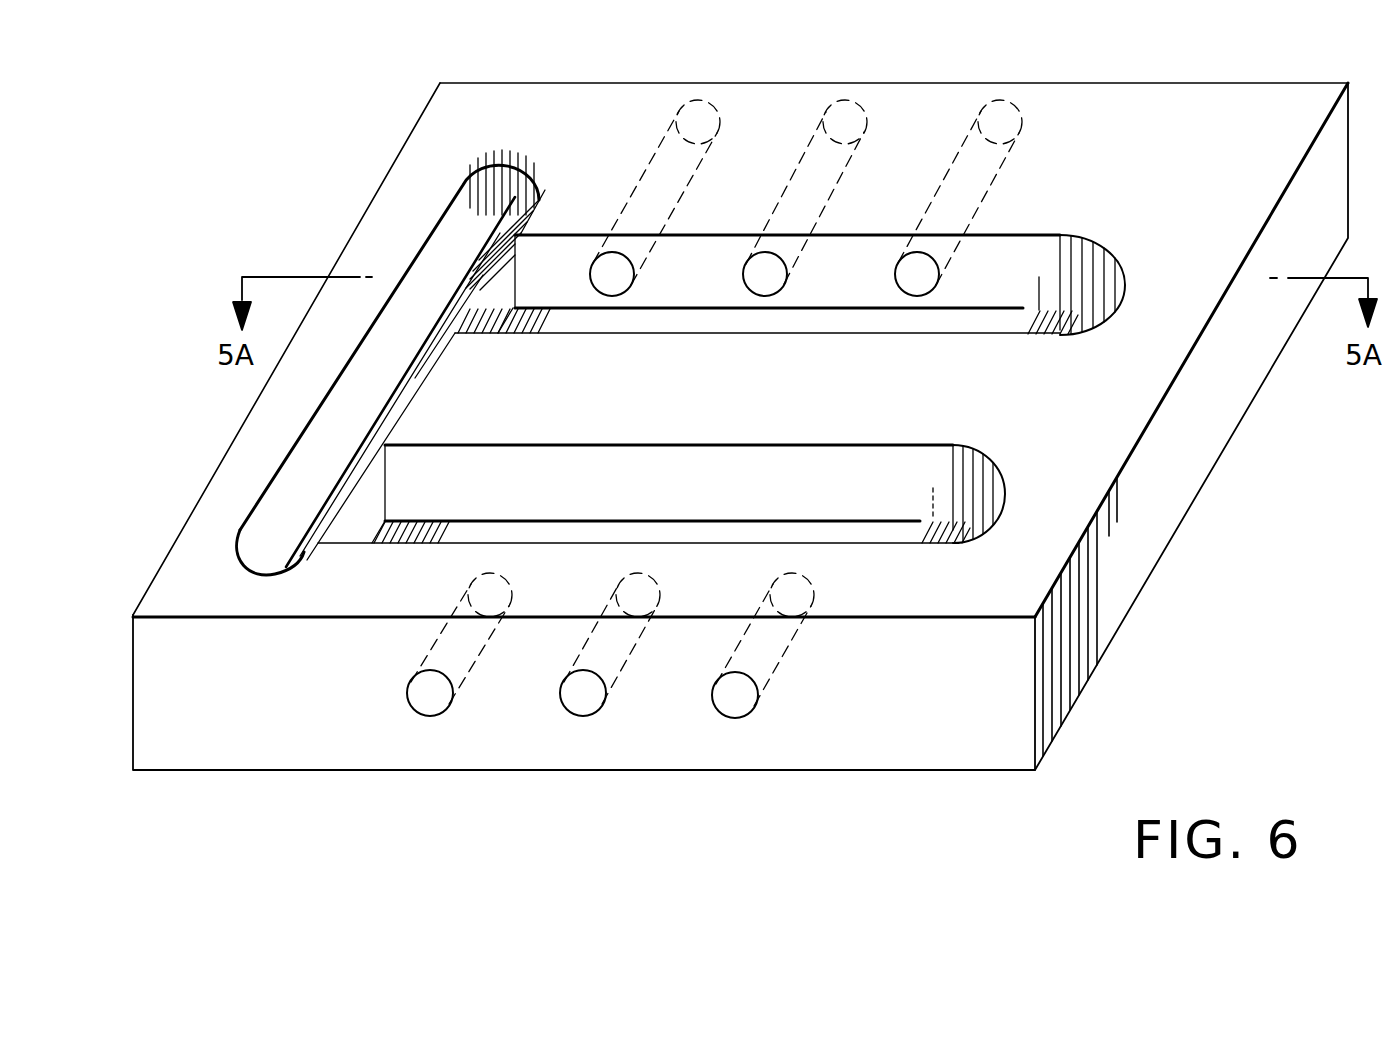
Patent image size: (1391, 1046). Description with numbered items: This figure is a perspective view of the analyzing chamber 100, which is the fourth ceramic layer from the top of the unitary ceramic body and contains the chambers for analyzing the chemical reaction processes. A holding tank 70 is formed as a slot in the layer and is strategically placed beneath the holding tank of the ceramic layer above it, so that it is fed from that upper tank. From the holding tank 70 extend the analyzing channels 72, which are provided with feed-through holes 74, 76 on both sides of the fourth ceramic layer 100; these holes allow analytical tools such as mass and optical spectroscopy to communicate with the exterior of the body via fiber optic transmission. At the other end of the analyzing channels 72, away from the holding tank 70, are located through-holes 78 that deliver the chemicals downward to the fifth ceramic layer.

The analyzing chamber 100 is at (1175, 608).
The holding tank 70 is at (508, 178).
The analyzing channels 72 is at (1035, 248).
The feed-through holes 74 is at (714, 106).
The feed-through holes 76 is at (435, 712).
The through-holes 78 is at (1000, 330).